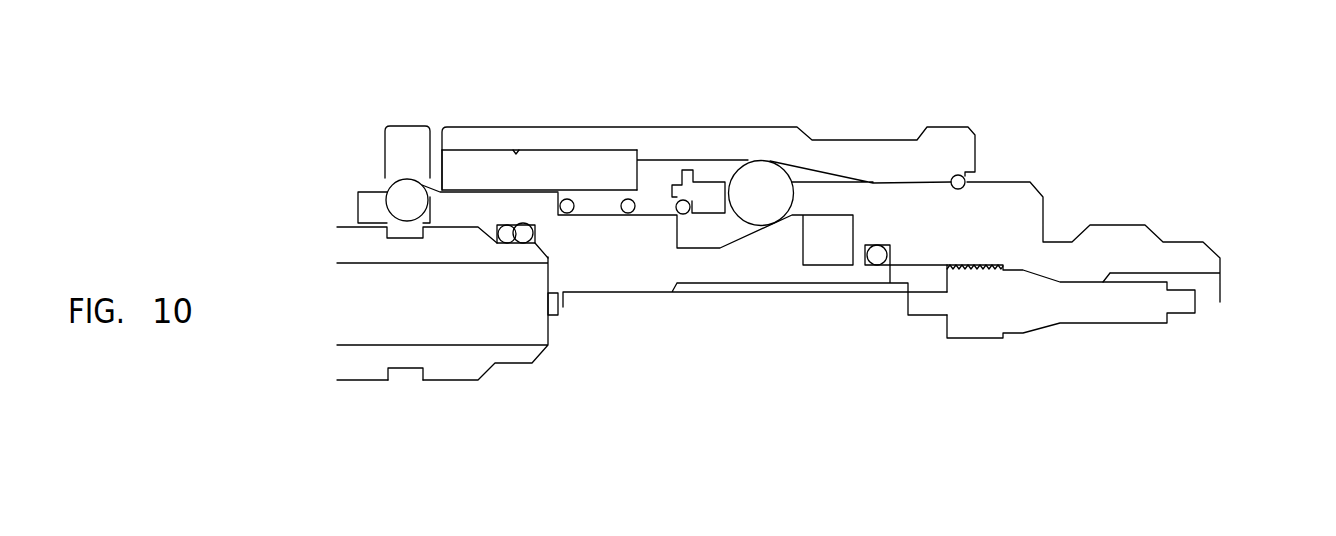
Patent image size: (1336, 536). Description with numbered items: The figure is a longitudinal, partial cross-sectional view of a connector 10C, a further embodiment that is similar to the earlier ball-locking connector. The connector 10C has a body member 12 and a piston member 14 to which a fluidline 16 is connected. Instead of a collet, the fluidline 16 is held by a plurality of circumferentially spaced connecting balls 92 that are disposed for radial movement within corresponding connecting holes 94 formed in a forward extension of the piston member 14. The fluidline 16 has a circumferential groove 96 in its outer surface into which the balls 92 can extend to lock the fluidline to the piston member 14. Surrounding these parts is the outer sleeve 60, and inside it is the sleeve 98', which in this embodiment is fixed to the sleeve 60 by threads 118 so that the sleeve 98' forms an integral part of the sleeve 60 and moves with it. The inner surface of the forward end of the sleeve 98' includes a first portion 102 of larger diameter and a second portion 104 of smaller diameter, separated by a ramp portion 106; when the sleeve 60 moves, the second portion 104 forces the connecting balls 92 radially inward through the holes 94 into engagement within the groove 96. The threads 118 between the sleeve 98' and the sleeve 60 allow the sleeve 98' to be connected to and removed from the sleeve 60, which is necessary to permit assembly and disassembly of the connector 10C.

The connector 10C is at (1163, 192).
The body member 12 is at (1042, 185).
The piston member 14 is at (752, 265).
The fluidline 16 is at (350, 365).
The sleeve 60 is at (828, 152).
The connecting balls 92 is at (393, 183).
The connecting holes 94 is at (382, 192).
The circumferential groove 96 is at (403, 375).
The sleeve 98' is at (539, 98).
The first portion 102 is at (400, 180).
The second portion 104 is at (582, 190).
The ramp portion 106 is at (427, 180).
The threads 118 is at (583, 153).